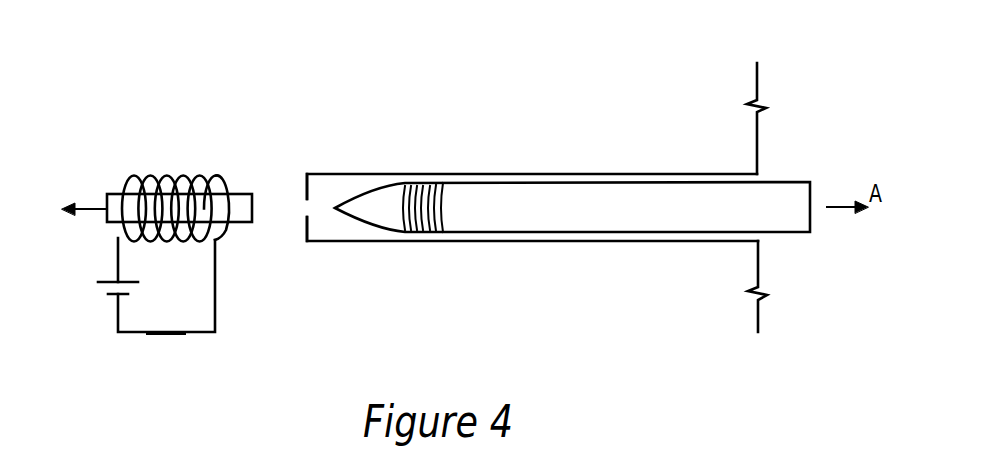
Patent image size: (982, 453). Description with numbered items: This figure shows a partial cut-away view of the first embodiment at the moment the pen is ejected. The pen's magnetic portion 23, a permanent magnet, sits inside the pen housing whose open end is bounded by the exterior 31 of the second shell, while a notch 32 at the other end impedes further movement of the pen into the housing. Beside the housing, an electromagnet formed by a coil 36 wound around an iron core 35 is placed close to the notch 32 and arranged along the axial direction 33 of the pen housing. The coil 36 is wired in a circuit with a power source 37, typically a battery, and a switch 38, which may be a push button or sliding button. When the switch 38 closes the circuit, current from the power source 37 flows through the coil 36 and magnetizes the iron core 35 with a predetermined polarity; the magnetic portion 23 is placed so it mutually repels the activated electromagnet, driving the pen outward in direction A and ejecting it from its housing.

The magnetic portion 23 is at (423, 188).
The exterior of the second shell 31 is at (757, 144).
The notch 32 is at (297, 173).
The axial direction 33 is at (72, 199).
The iron core 35 is at (108, 198).
The coil 36 is at (156, 173).
The power source 37 is at (98, 288).
The switch 38 is at (156, 336).